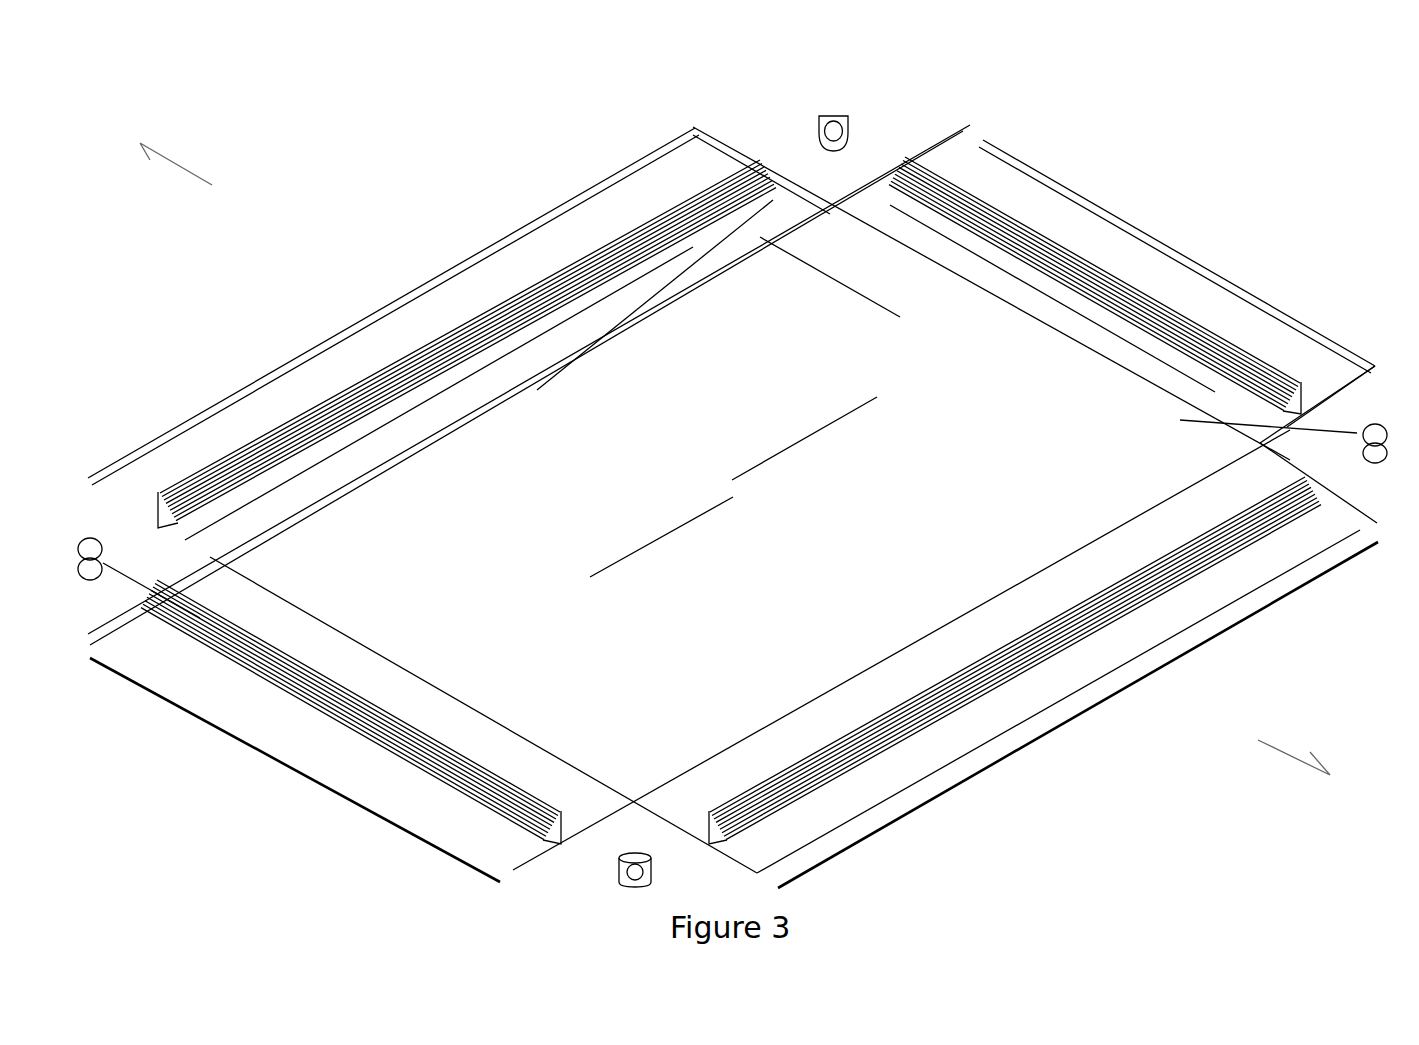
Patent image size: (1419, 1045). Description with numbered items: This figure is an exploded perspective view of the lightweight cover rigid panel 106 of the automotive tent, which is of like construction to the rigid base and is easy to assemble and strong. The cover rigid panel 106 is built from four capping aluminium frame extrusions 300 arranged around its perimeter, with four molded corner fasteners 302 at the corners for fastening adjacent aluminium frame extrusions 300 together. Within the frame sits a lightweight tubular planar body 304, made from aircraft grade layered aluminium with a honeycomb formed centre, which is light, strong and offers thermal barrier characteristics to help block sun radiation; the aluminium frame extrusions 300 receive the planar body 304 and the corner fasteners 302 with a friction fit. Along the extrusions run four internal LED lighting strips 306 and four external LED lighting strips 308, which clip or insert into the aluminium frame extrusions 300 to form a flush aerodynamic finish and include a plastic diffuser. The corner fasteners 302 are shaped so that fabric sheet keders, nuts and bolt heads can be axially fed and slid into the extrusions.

The cover rigid panel 106 is at (347, 171).
The capping aluminium frame extrusions 300 is at (727, 168).
The molded corner fasteners 302 is at (832, 114).
The planar body 304 is at (740, 431).
The internal LED lighting strips 306 is at (390, 422).
The external LED lighting strips 308 is at (289, 365).